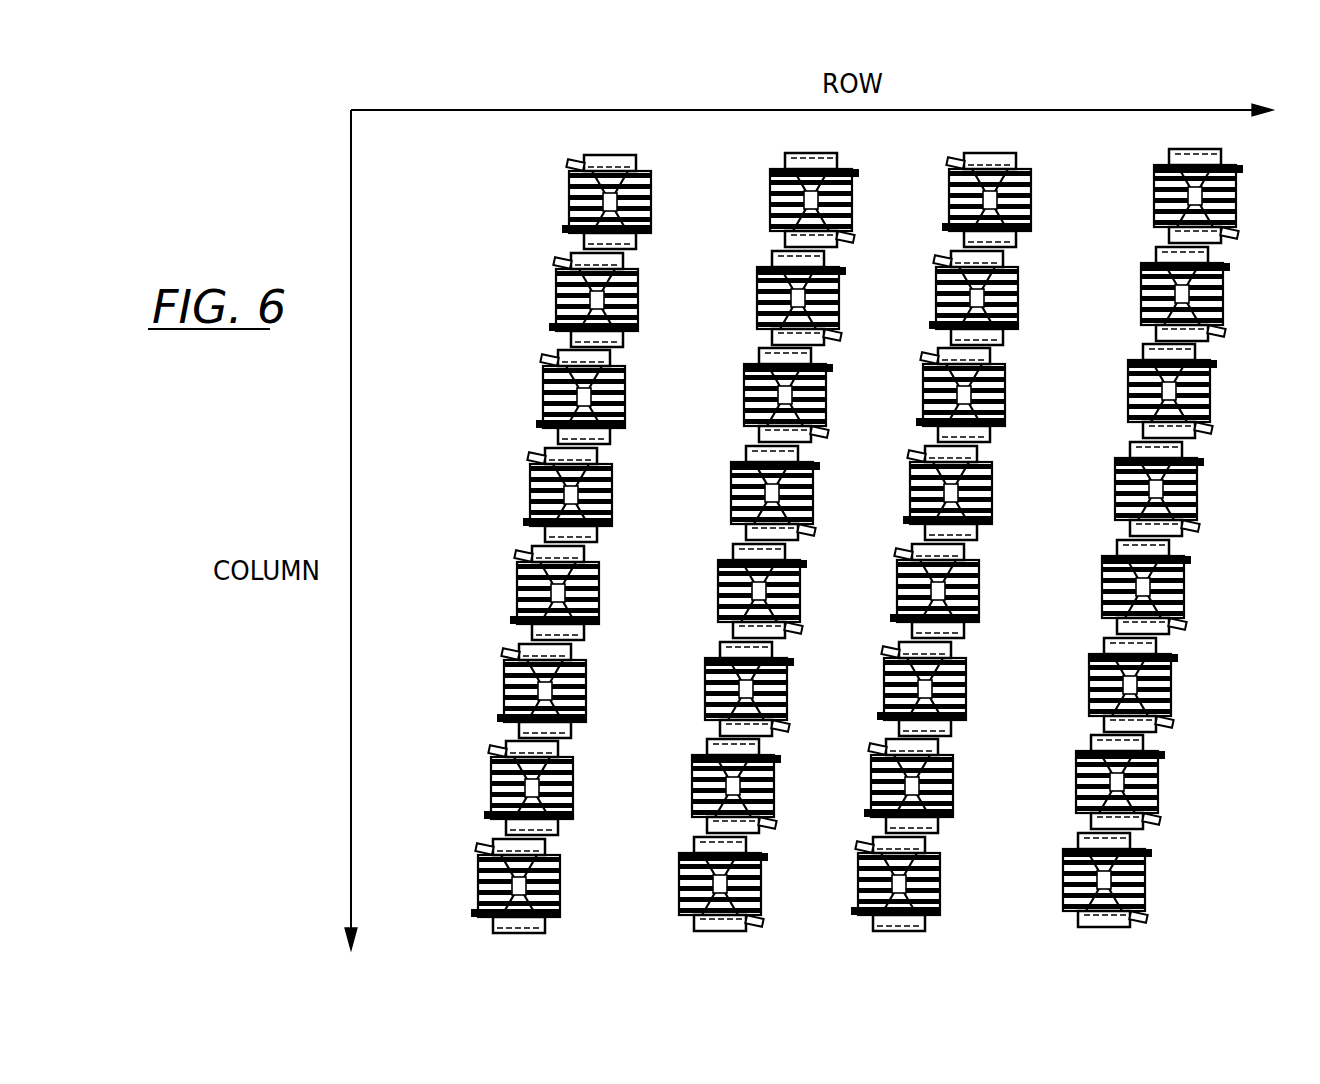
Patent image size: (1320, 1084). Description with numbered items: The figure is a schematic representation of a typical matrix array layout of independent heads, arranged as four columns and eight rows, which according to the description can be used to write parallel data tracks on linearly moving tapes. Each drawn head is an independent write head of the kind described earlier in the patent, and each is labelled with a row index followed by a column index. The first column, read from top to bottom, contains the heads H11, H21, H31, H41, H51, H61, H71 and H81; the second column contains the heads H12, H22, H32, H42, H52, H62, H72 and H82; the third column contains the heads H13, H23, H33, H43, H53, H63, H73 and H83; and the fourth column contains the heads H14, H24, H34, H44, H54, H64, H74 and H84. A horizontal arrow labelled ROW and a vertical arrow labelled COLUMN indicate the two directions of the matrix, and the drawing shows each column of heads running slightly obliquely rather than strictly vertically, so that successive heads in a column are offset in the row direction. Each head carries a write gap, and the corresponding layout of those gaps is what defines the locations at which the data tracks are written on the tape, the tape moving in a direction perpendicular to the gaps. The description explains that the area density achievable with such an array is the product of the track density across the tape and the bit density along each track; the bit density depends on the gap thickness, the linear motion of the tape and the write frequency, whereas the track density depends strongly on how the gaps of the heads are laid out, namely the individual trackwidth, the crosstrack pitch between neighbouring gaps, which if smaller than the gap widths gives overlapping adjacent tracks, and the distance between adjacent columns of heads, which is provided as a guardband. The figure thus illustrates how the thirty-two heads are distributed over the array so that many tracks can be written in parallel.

The head H11 is at (575, 202).
The head H21 is at (562, 300).
The head H31 is at (549, 397).
The head H41 is at (536, 495).
The head H51 is at (523, 593).
The head H61 is at (510, 691).
The head H71 is at (497, 788).
The head H81 is at (484, 886).
The head H12 is at (787, 200).
The head H22 is at (774, 298).
The head H32 is at (761, 395).
The head H42 is at (748, 493).
The head H52 is at (735, 591).
The head H62 is at (722, 689).
The head H72 is at (709, 786).
The head H82 is at (696, 884).
The head H13 is at (1021, 200).
The head H23 is at (1008, 298).
The head H33 is at (995, 395).
The head H43 is at (982, 493).
The head H53 is at (969, 591).
The head H63 is at (956, 689).
The head H73 is at (943, 786).
The head H83 is at (930, 884).
The head H14 is at (1231, 196).
The head H24 is at (1218, 294).
The head H34 is at (1205, 391).
The head H44 is at (1192, 489).
The head H54 is at (1179, 587).
The head H64 is at (1166, 685).
The head H74 is at (1153, 782).
The head H84 is at (1140, 880).